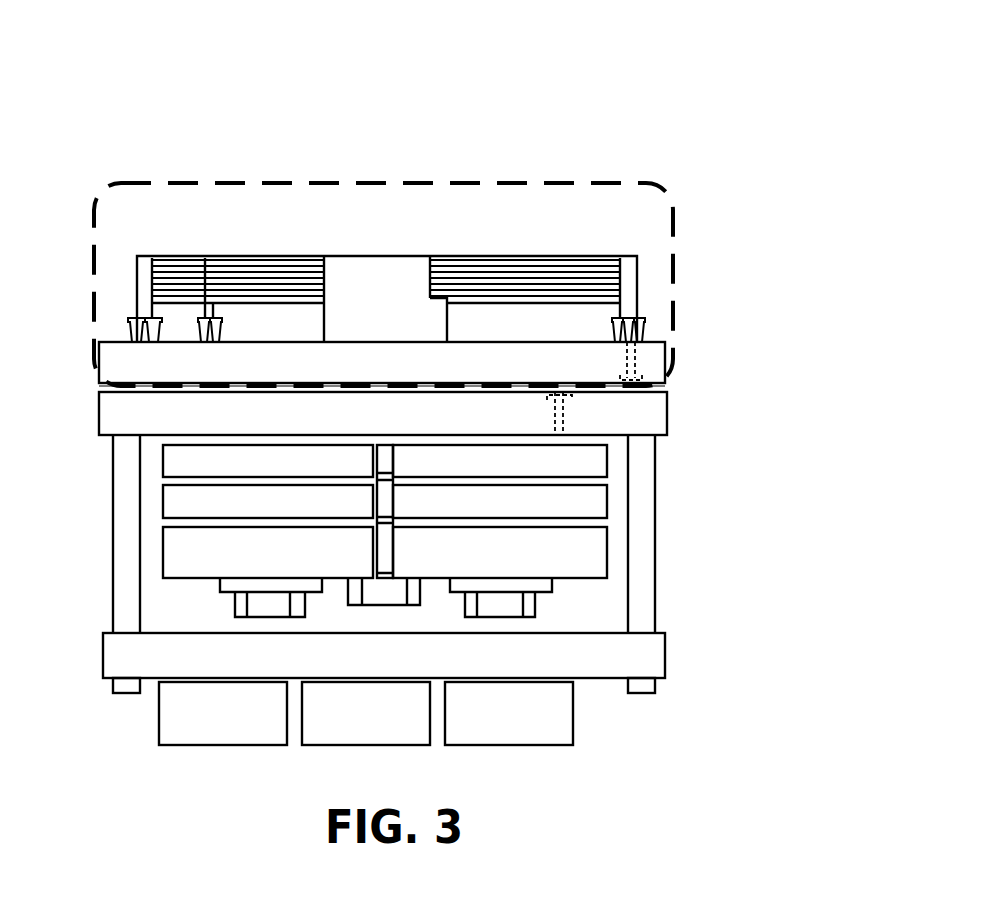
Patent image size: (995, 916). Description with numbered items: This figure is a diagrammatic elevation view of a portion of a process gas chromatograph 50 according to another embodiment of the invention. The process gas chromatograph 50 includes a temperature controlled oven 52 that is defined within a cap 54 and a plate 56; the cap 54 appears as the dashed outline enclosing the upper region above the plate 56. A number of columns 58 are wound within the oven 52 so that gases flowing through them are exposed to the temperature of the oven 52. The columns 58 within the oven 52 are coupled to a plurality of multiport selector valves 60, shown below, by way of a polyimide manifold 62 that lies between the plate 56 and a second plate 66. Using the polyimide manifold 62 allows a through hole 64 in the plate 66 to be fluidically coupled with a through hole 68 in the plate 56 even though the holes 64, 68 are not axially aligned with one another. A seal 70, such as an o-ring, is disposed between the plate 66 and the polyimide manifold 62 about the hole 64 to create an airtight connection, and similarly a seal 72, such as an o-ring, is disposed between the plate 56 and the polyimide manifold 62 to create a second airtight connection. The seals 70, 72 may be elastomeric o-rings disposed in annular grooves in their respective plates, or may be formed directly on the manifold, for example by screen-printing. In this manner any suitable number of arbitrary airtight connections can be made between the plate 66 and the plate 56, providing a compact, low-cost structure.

The process gas chromatograph 50 is at (563, 85).
The temperature controlled oven 52 is at (615, 210).
The cap 54 is at (395, 183).
The plate 56 is at (127, 360).
The columns 58 is at (240, 262).
The multiport selector valves 60 is at (207, 582).
The polyimide manifold 62 is at (660, 387).
The through hole 64 is at (563, 425).
The plate 66 is at (667, 422).
The through hole 68 is at (623, 353).
The seal 70 is at (548, 396).
The seal 72 is at (640, 374).